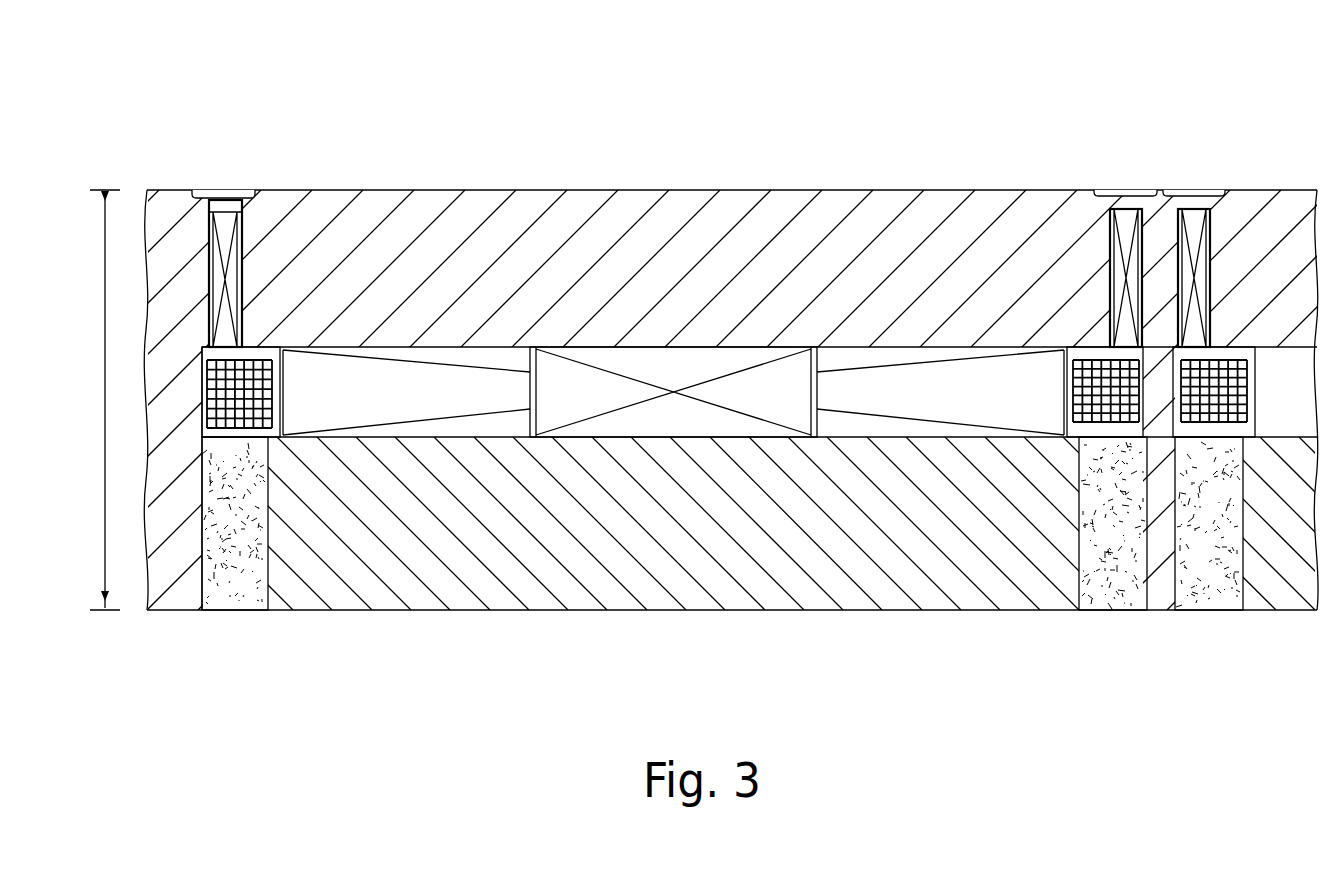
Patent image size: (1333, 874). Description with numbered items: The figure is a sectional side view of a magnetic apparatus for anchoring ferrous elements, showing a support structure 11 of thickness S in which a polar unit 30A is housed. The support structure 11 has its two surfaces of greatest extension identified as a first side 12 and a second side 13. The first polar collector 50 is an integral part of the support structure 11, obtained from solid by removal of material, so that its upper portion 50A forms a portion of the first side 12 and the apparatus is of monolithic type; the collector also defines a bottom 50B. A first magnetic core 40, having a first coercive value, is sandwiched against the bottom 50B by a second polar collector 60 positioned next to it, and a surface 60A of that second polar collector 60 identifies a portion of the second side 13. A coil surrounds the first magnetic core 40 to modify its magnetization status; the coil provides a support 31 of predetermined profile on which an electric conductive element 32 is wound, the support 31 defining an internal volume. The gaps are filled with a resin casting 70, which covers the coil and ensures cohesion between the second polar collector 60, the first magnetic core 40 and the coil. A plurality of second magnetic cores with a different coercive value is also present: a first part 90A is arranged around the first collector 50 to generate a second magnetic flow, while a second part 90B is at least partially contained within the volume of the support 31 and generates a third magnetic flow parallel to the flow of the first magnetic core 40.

The polar unit 30A is at (749, 147).
The first polar collector 50 is at (555, 240).
The upper portion of the first polar collector 50A is at (435, 190).
The bottom of the first polar collector 50B is at (846, 347).
The first part of the second magnetic cores 90A is at (223, 227).
The first side 12 is at (1115, 182).
The support structure 11 is at (1150, 238).
The first magnetic core 40 is at (418, 397).
The second part of the second magnetic cores 90B is at (680, 415).
The resin casting 70 is at (237, 428).
The support 31 is at (200, 557).
The electric conductive element 32 is at (1118, 402).
The second polar collector 60 is at (335, 552).
The surface of the second polar collector 60A is at (530, 612).
The second side 13 is at (937, 613).
The thickness S is at (105, 228).